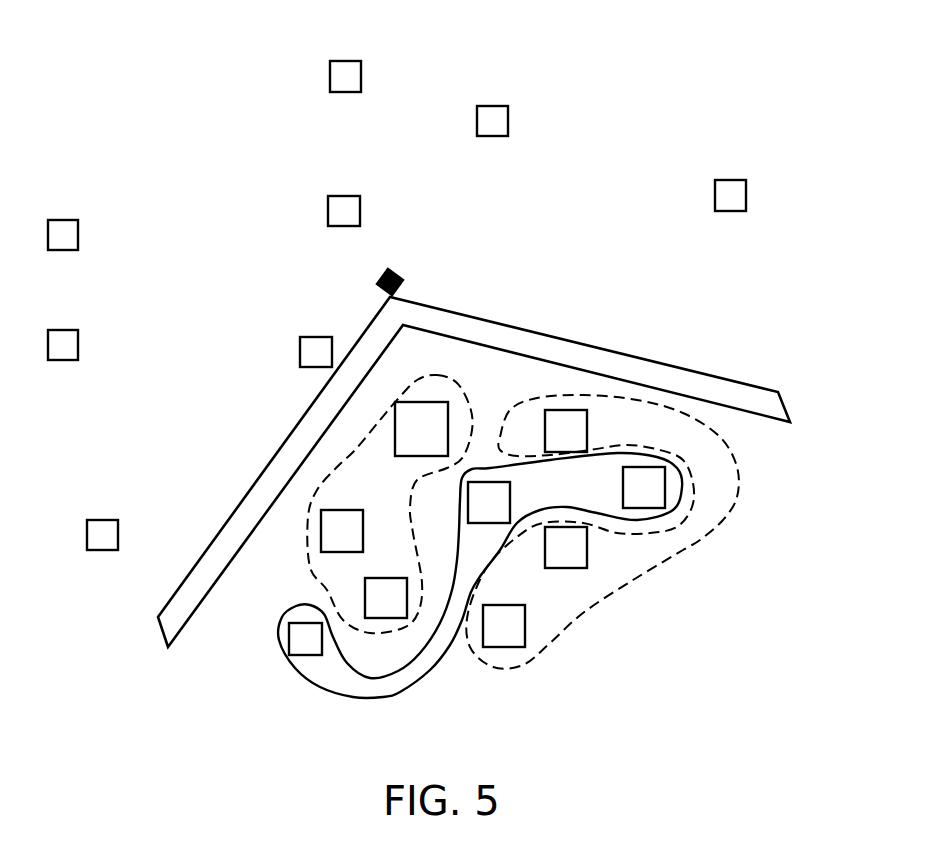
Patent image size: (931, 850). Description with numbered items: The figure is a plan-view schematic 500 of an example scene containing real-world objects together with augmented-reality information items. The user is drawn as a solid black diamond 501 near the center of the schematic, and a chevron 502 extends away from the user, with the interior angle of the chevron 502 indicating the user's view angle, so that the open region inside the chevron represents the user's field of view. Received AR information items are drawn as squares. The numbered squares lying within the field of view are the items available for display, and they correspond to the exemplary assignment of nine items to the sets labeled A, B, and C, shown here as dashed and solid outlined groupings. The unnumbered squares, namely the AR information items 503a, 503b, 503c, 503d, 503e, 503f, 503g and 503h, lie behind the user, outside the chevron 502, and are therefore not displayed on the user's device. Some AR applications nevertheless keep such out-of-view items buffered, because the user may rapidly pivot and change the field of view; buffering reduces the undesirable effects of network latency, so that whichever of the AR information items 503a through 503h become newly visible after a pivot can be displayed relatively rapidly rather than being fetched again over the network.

The plan-view schematic 500 is at (691, 43).
The solid black diamond 501 is at (375, 275).
The chevron 502 is at (588, 344).
The AR information item 503a is at (345, 61).
The AR information item 503b is at (492, 106).
The AR information item 503c is at (730, 180).
The AR information item 503d is at (62, 220).
The AR information item 503e is at (345, 196).
The AR information item 503f is at (62, 330).
The AR information item 503g is at (314, 337).
The AR information item 503h is at (102, 520).